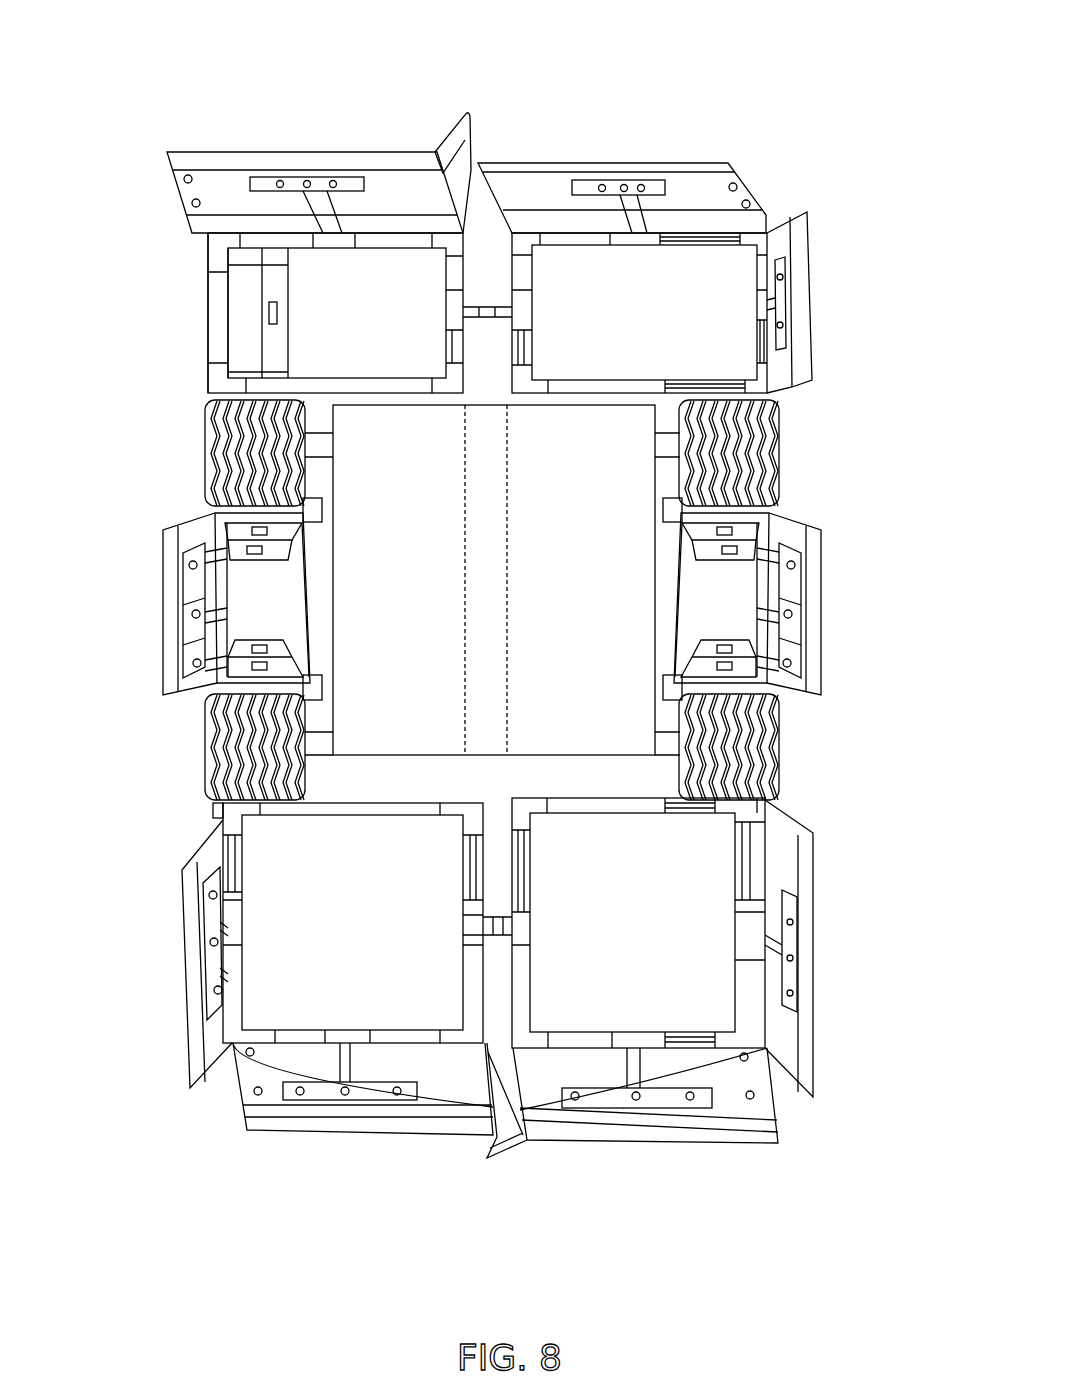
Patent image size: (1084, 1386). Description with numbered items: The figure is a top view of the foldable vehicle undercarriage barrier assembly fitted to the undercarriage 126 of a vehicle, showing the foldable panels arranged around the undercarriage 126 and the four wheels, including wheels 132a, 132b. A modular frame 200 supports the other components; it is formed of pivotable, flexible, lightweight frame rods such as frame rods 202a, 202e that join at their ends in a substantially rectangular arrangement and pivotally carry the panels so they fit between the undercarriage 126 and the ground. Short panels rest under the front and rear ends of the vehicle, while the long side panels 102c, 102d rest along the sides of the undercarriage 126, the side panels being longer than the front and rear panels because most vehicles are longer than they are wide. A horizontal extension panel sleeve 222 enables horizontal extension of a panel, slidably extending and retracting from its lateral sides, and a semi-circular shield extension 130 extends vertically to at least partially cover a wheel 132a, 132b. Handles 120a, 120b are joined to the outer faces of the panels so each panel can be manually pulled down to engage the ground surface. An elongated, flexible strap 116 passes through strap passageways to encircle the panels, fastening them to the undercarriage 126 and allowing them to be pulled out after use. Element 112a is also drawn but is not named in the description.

The handle 120a is at (462, 78).
The handle 120b is at (503, 1192).
The horizontal extension panel sleeve 222 is at (462, 157).
The frame 200 is at (172, 345).
The frame rod 202e is at (198, 293).
The wheel 132a is at (208, 422).
The wheel 132b is at (775, 462).
The undercarriage 126 is at (633, 443).
The support frame 112a is at (215, 517).
The shield extension 130 is at (776, 506).
The side panel 102c is at (147, 603).
The side panel 102d is at (855, 589).
The frame rod 202a is at (782, 807).
The strap 116 is at (717, 1075).